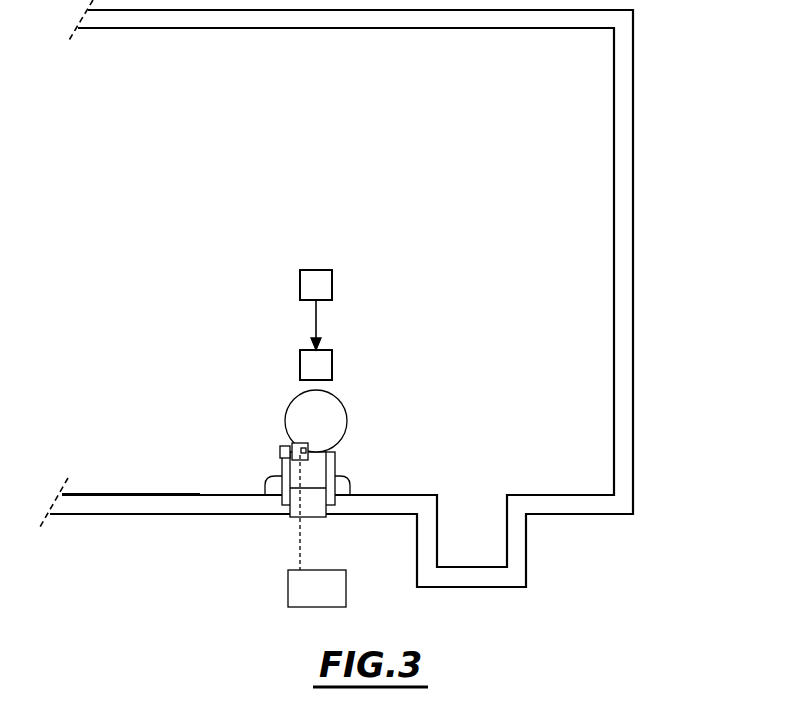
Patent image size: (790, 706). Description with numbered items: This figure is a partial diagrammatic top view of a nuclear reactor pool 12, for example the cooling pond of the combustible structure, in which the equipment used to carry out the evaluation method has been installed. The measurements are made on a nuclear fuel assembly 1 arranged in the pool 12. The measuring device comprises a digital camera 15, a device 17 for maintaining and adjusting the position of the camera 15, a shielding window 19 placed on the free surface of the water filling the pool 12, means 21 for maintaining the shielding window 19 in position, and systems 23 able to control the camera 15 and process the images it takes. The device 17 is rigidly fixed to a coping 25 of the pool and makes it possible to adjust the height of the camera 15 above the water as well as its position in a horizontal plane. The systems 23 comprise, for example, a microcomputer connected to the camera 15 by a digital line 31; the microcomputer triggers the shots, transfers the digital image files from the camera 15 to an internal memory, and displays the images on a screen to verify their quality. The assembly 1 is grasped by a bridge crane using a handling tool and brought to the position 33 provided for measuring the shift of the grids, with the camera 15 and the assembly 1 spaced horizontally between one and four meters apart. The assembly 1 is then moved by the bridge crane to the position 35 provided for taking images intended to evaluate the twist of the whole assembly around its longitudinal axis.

The pool 12 is at (654, 250).
The coping 25 is at (91, 505).
The device for maintaining and adjusting the position of the camera 17 is at (267, 514).
The means for maintaining the shielding window in position 21 is at (350, 514).
The shielding window 19 is at (347, 428).
The digital camera 15 is at (293, 445).
The digital line 31 is at (301, 538).
The systems able to control the camera and process the images 23 is at (317, 588).
The position 33 is at (345, 279).
The position 35 is at (349, 365).
The assembly 1 is at (300, 283).